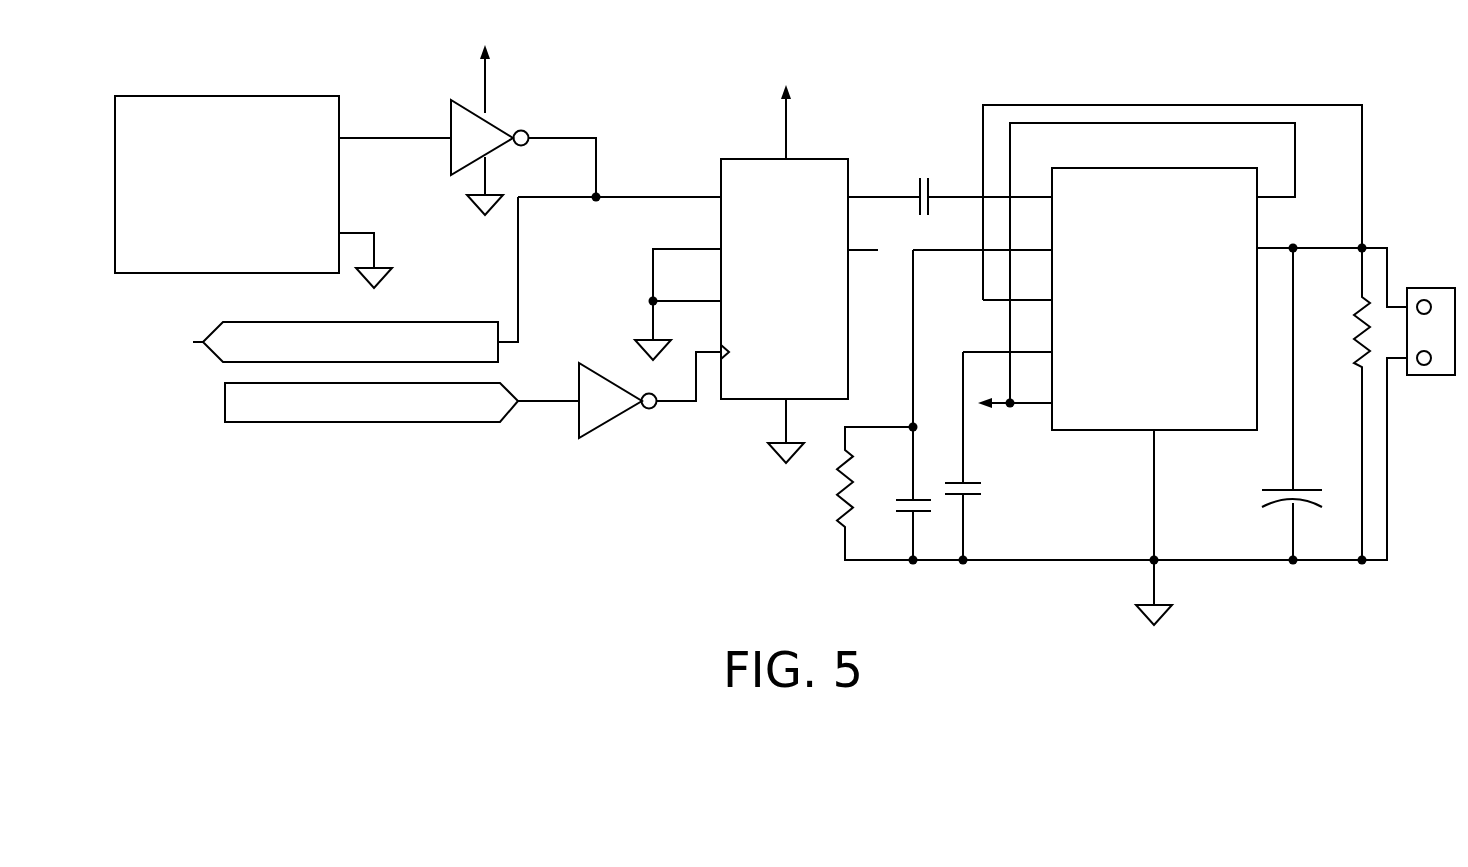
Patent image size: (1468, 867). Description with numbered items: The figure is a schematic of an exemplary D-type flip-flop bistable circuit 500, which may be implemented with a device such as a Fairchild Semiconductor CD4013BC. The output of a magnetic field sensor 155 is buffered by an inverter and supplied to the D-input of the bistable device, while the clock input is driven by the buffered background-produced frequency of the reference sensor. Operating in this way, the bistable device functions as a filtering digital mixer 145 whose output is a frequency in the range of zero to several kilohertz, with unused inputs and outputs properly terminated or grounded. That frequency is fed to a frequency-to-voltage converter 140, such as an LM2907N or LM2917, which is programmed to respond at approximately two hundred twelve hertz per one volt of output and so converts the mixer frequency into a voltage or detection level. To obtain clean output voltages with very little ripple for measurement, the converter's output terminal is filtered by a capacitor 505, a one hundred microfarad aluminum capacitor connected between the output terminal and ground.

The D-type flip-flop bistable circuit 500 is at (1340, 68).
The magnetic field sensor 155 is at (160, 108).
The filtering digital mixer 145 is at (833, 172).
The frequency-to-voltage converter 140 is at (1100, 420).
The capacitor 505 is at (1270, 508).